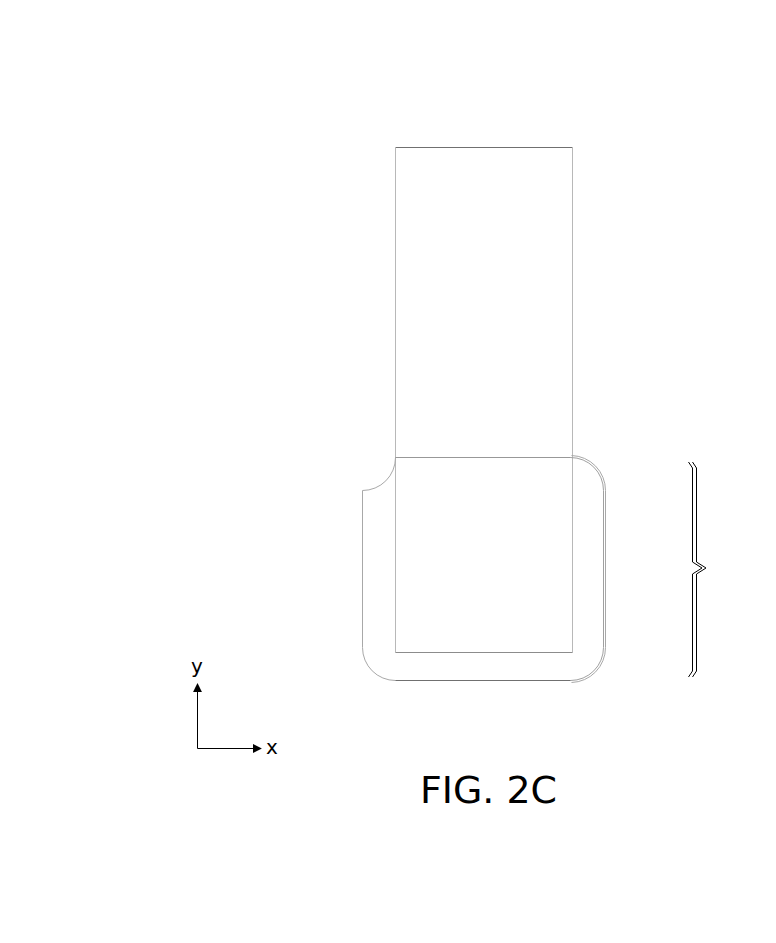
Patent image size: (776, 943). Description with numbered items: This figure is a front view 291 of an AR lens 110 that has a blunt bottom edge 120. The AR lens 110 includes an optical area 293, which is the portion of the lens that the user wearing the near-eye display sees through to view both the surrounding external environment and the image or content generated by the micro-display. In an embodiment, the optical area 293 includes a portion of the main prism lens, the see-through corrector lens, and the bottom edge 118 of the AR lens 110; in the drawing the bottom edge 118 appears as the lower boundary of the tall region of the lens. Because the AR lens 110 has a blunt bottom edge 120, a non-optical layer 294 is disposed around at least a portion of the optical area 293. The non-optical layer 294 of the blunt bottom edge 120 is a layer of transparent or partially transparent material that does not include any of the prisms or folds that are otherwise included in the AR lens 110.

The front view 291 is at (335, 91).
The AR lens 110 is at (482, 145).
The blunt bottom edge 120 is at (371, 672).
The bottom edge 118 is at (517, 655).
The optical area 293 is at (720, 569).
The non-optical layer 294 is at (593, 662).